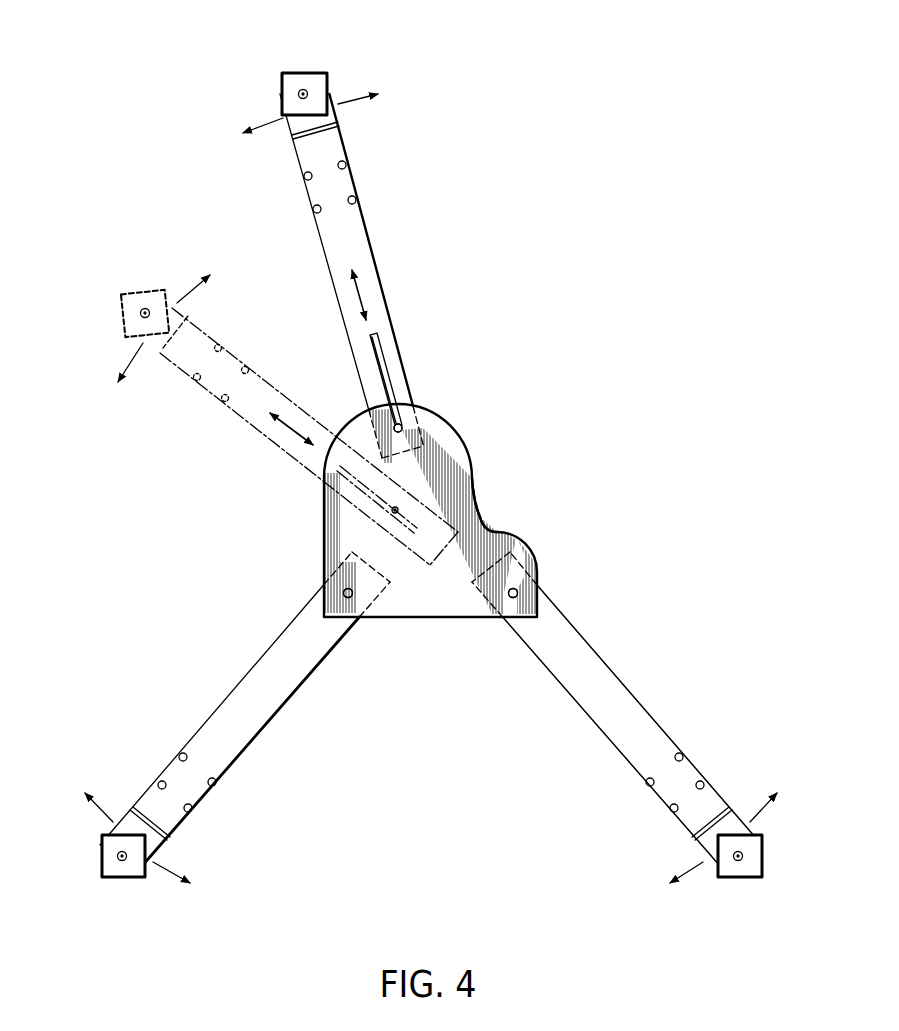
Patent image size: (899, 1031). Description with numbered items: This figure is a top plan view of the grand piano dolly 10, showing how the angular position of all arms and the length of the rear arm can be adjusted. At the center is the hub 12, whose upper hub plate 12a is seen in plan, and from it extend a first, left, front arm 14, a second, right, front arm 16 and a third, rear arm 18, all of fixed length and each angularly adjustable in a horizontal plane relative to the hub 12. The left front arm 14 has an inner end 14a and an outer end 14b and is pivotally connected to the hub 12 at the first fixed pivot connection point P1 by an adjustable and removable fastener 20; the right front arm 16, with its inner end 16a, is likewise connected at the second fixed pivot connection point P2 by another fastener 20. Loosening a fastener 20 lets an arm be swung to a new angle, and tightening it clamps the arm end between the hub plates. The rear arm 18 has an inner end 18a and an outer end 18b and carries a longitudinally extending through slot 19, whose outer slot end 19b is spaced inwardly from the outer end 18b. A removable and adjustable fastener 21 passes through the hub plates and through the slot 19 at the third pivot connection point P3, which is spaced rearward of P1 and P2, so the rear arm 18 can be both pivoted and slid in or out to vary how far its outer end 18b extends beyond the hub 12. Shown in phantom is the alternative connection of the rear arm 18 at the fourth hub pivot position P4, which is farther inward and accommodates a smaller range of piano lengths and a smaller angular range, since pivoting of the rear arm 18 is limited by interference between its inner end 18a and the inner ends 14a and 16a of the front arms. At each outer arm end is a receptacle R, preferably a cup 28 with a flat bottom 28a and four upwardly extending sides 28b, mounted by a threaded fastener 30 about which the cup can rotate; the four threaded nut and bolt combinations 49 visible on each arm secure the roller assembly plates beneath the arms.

The grand piano dolly 10 is at (613, 396).
The central hub 12 is at (517, 527).
The upper hub plate 12a is at (364, 410).
The first, left, front arm 14 is at (222, 710).
The inner end of left front arm 14a is at (382, 591).
The outer end of left front arm 14b is at (133, 811).
The second, right, front arm 16 is at (638, 707).
The inner end of right front arm 16a is at (480, 591).
The third, rear arm 18 is at (372, 242).
The inner end of rear arm 18a is at (425, 455).
The outer end of rear arm 18b is at (338, 127).
The longitudinally extending through slot 19 is at (389, 381).
The outer slot end 19b is at (376, 336).
The adjustable and removable fastener 20 is at (344, 591).
The removable and adjustable fastener 21 is at (401, 427).
The cup 28 is at (329, 74).
The flat bottom of cup 28a is at (293, 83).
The upwardly extending sides of cup 28b is at (282, 106).
The threaded fastener 30 is at (304, 89).
The threaded nut and bolt combinations 49 is at (320, 211).
The first fixed pivot connection point P1 is at (343, 594).
The second fixed pivot connection point P2 is at (518, 594).
The third pivot connection point P3 is at (402, 429).
The fourth hub pivot position P4 is at (391, 511).
The receptacle R is at (289, 56).